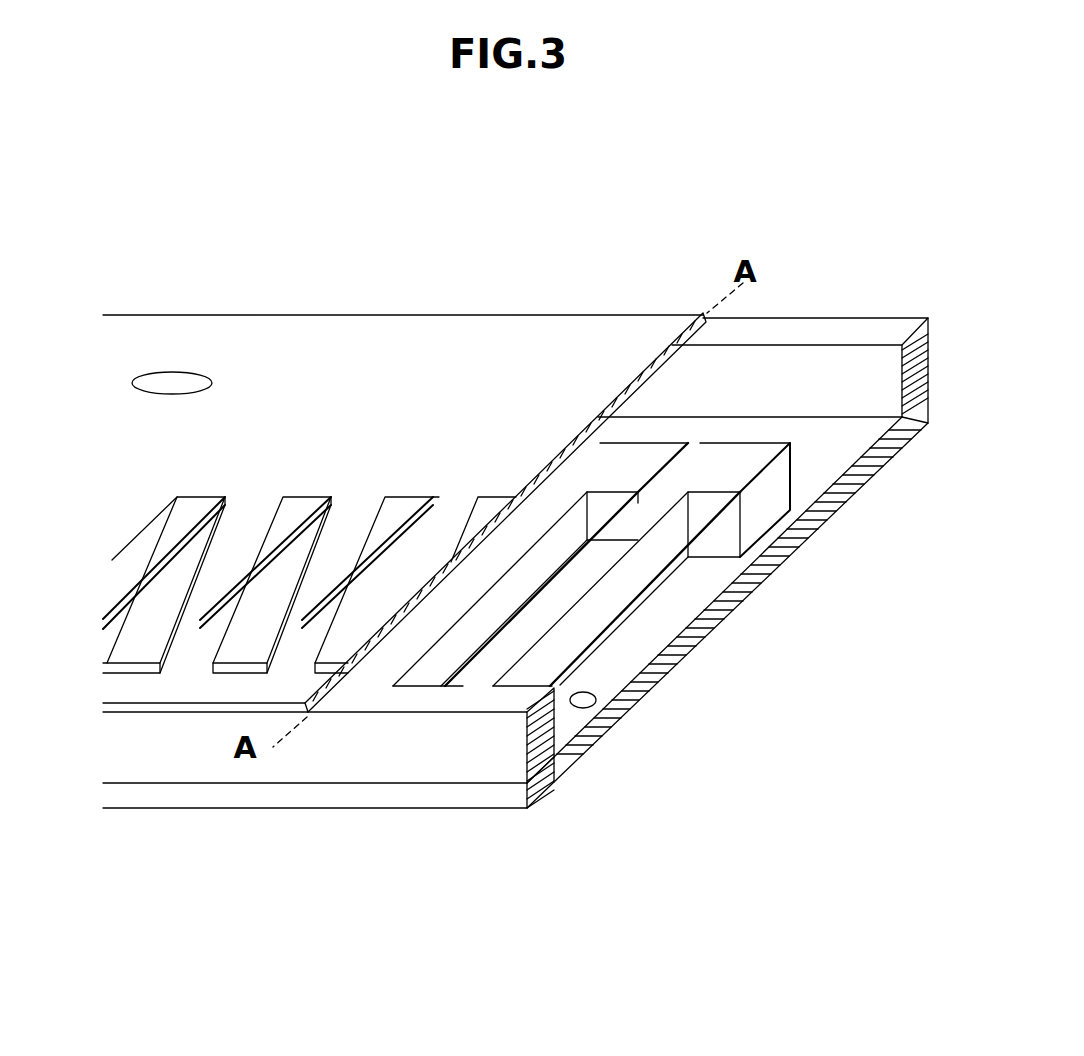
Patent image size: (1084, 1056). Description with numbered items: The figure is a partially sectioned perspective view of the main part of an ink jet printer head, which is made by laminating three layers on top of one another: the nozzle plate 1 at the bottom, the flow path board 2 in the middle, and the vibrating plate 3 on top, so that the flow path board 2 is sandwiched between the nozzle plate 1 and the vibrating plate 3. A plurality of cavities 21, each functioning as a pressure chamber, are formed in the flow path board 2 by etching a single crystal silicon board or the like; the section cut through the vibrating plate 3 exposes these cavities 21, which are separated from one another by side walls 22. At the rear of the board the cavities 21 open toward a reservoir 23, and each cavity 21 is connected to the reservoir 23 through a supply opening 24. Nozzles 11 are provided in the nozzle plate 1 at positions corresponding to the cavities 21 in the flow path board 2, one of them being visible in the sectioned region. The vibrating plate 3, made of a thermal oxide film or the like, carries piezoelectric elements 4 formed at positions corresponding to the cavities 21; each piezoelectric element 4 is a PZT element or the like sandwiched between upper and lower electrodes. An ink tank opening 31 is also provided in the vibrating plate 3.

The nozzle plate 1 is at (602, 740).
The nozzles 11 is at (596, 704).
The flow path board 2 is at (322, 747).
The cavities 21 is at (502, 617).
The side walls 22 is at (592, 578).
The reservoir 23 is at (690, 403).
The supply opening 24 is at (660, 477).
The vibrating plate 3 is at (160, 703).
The ink tank opening 31 is at (173, 372).
The piezoelectric elements 4 is at (292, 505).